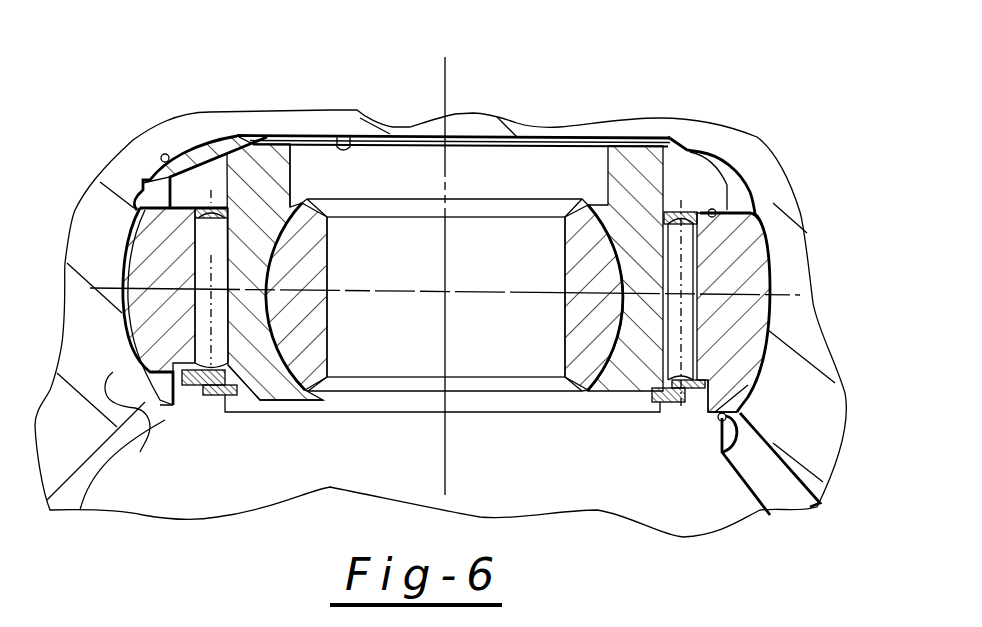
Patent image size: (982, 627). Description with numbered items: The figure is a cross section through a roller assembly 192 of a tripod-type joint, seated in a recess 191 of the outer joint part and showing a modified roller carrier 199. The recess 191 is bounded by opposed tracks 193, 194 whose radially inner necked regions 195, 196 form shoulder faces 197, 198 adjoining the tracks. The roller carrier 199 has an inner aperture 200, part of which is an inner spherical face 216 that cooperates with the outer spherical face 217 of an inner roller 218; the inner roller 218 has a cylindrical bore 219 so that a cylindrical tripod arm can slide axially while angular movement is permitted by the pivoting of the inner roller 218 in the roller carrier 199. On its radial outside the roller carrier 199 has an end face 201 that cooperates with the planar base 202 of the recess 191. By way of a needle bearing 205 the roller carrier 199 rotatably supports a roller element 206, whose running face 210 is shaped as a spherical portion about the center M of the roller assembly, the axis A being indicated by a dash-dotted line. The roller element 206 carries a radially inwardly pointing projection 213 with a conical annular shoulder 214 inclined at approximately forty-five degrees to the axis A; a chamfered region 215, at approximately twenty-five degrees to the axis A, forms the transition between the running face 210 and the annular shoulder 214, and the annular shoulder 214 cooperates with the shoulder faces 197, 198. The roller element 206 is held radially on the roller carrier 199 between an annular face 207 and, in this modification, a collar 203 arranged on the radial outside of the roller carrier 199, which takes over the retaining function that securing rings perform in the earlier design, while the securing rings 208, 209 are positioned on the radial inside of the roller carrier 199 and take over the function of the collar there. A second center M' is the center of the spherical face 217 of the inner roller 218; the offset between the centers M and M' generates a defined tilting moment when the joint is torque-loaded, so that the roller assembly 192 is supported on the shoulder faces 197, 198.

The recess 191 is at (165, 154).
The roller assembly 192 is at (366, 191).
The track 193 is at (135, 205).
The track 194 is at (768, 213).
The necked region 195 is at (80, 510).
The necked region 196 is at (763, 458).
The shoulder face 197 is at (173, 410).
The shoulder face 198 is at (728, 457).
The roller carrier 199 is at (245, 190).
The inner aperture 200 is at (305, 160).
The end face 201 is at (267, 136).
The planar base 202 is at (400, 134).
The collar 203 is at (686, 211).
The needle bearing 205 is at (630, 237).
The roller element 206 is at (775, 195).
The annular face 207 is at (728, 247).
The securing ring 208 is at (677, 405).
The securing ring 209 is at (690, 402).
The running face 210 is at (775, 260).
The projection 213 is at (160, 403).
The conical annular shoulder 214 is at (140, 452).
The chamfered region 215 is at (110, 405).
The inner spherical face 216 is at (324, 372).
The spherical face 217 is at (262, 336).
The inner roller 218 is at (587, 395).
The cylindrical bore 219 is at (553, 350).
The axis A is at (447, 130).
The center M is at (408, 260).
The second center M' is at (391, 329).